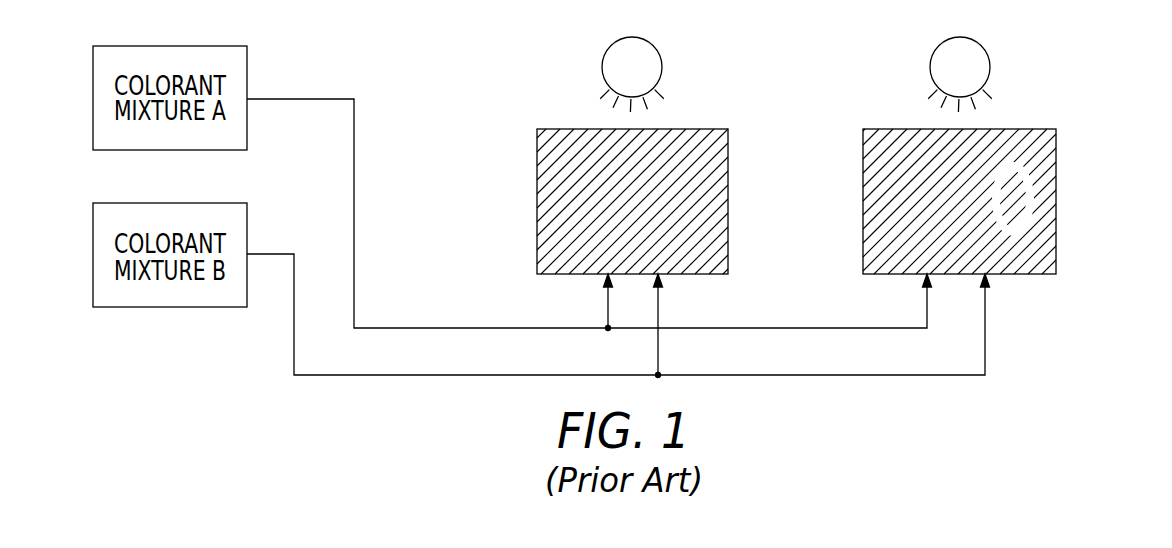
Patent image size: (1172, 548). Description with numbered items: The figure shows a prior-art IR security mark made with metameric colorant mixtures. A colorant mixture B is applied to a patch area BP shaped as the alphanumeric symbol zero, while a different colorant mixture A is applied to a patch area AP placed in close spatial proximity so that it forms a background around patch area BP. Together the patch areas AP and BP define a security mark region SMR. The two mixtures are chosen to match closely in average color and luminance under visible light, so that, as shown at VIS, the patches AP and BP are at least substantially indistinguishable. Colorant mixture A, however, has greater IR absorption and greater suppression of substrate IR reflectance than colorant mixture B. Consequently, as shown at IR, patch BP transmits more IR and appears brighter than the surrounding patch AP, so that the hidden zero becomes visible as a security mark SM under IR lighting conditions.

The visible light condition VIS is at (570, 108).
The IR lighting condition IR is at (1021, 112).
The patch area AP is at (552, 170).
The patch area BP is at (707, 192).
The security mark region SMR is at (784, 201).
The security mark SM is at (1027, 228).